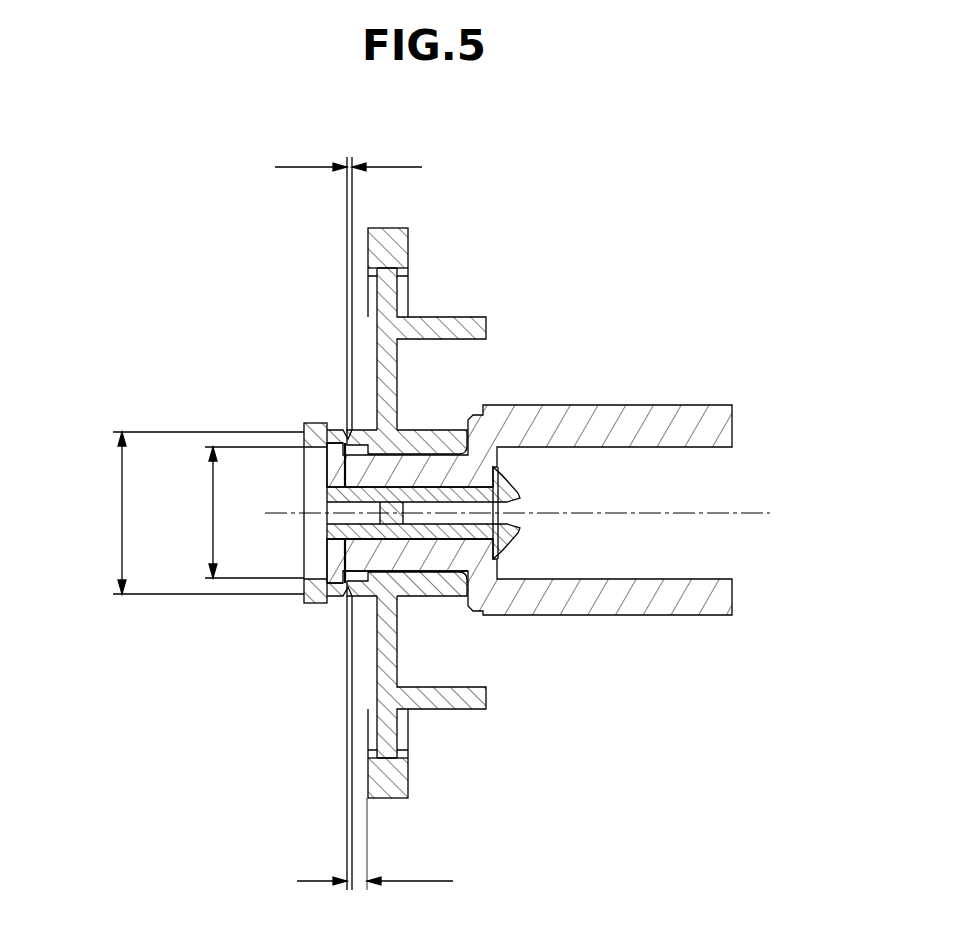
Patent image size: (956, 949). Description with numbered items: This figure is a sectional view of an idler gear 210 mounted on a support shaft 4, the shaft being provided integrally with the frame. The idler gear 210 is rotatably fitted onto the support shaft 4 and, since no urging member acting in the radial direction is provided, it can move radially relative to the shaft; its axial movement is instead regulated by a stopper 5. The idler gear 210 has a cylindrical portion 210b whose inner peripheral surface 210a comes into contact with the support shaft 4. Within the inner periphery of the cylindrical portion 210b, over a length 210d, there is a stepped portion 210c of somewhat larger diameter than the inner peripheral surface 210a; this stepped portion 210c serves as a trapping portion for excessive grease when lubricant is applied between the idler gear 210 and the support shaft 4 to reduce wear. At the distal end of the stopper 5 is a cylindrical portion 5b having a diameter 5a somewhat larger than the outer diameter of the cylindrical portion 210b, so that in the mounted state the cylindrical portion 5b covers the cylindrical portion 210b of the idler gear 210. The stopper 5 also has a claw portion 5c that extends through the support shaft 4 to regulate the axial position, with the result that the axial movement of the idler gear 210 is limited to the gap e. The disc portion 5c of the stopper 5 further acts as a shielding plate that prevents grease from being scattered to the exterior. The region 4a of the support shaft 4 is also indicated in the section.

The support shaft 4 is at (529, 540).
The hub portion of housing 4a is at (418, 548).
The stopper 5 is at (437, 476).
The diameter 5a is at (194, 513).
The cylindrical portion 5b is at (333, 425).
The claw portion 5c is at (507, 486).
The idler gear 210 is at (414, 512).
The inner peripheral surface 210a is at (413, 447).
The cylindrical portion 210b is at (358, 594).
The stepped portion 210c is at (226, 512).
The length 210d is at (375, 844).
The gap e is at (348, 154).